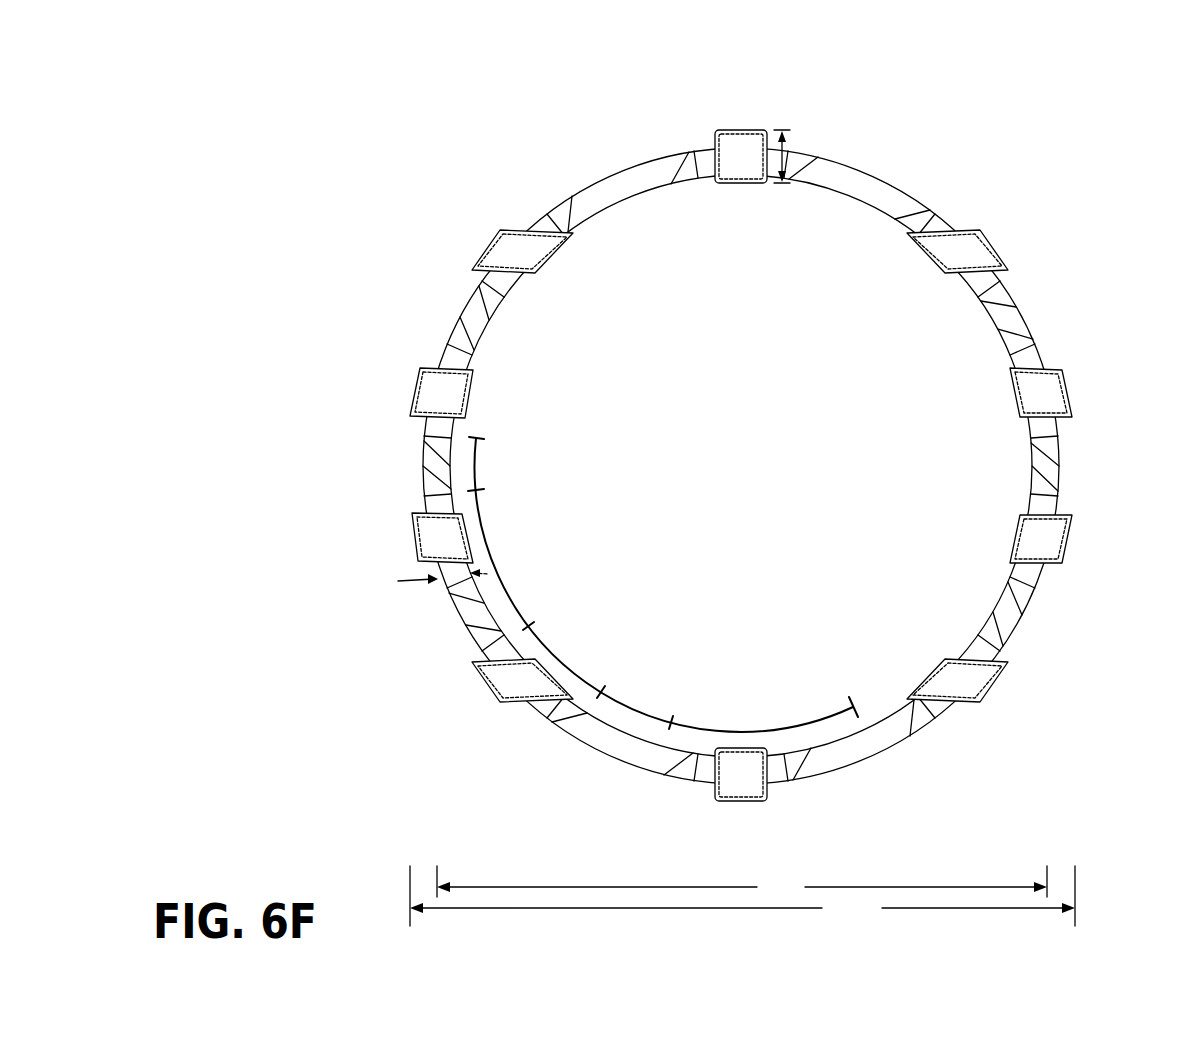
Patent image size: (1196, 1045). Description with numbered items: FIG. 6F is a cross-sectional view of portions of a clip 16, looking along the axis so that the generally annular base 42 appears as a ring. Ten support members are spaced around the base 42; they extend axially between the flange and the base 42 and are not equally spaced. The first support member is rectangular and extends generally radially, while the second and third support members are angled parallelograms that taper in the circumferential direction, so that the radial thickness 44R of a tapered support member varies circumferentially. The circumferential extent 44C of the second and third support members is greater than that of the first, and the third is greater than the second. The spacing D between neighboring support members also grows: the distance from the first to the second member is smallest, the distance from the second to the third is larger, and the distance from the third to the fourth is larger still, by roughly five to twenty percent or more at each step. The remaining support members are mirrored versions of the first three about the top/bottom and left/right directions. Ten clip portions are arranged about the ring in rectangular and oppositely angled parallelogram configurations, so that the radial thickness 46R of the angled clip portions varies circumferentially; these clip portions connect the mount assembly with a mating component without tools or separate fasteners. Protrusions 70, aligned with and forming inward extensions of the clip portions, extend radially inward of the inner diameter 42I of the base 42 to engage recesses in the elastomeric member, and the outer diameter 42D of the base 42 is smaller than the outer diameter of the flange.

The clip 16 is at (925, 88).
The base 42 is at (682, 160).
The protrusion 70 is at (1002, 363).
The radial thickness of clip portion 46R is at (786, 150).
The radial thickness of support member 44R is at (418, 580).
The circumferential extent of support member 44C is at (481, 462).
The circumferential distance between support members D is at (483, 530).
The inner diameter of base 42I is at (742, 883).
The outer diameter of base 42D is at (742, 896).